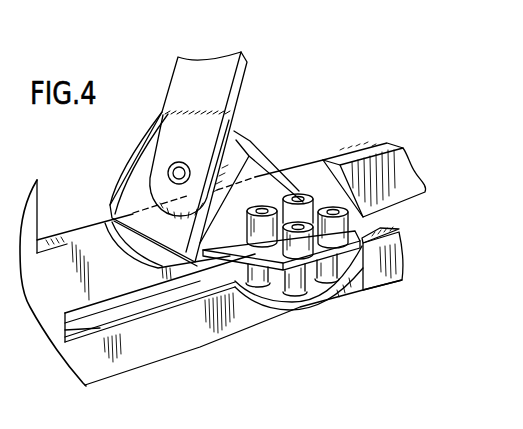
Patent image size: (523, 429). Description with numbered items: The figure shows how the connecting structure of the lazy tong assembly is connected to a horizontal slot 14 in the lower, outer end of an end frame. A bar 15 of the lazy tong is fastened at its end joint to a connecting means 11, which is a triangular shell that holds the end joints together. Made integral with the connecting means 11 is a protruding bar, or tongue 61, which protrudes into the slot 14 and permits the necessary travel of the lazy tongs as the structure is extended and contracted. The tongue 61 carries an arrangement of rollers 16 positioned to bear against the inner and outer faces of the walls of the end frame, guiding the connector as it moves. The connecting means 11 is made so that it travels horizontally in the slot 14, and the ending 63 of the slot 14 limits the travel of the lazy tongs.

The connecting means 11 is at (251, 168).
The horizontal slot 14 is at (223, 265).
The bar 15 is at (176, 165).
The rollers 16 is at (297, 233).
The protruding bar (tongue) 61 is at (288, 284).
The ending of slot 63 is at (160, 335).